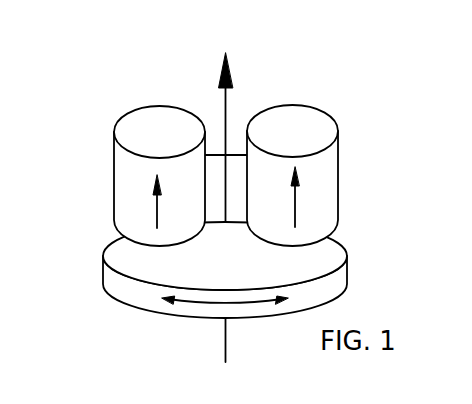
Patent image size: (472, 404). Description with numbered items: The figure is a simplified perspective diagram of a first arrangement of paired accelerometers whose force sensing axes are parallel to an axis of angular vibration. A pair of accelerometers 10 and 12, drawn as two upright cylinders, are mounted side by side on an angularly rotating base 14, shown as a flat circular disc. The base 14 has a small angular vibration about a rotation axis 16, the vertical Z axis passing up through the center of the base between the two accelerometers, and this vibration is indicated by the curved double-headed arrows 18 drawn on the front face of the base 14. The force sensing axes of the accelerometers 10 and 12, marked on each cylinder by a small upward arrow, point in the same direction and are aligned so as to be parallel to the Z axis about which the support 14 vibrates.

The accelerometer 10 is at (114, 150).
The accelerometer 12 is at (338, 146).
The angularly rotating base 14 is at (340, 278).
The rotation axis 16 is at (228, 110).
The arrows 18 is at (202, 303).